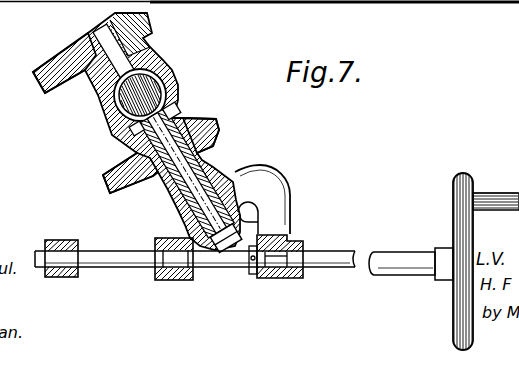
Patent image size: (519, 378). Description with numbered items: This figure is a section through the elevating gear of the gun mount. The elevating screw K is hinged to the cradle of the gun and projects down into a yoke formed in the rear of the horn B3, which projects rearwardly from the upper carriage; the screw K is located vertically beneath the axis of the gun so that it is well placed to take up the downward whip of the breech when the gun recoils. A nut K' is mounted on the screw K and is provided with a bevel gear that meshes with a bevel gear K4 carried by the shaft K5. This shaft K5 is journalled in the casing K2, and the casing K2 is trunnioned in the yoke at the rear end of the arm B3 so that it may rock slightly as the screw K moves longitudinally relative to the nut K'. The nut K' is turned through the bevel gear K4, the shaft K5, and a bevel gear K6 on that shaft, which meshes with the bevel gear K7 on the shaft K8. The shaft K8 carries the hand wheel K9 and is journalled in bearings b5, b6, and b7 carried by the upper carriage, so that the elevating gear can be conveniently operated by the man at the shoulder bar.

The elevating screw K is at (136, 131).
The nut K' is at (187, 147).
The casing K2 is at (241, 148).
The bevel gear K4 is at (186, 108).
The shaft K5 is at (232, 176).
The bevel gear K6 is at (243, 220).
The bevel gear K7 is at (207, 273).
The shaft K8 is at (388, 260).
The hand wheel K9 is at (456, 187).
The horn B3 is at (105, 178).
The bearing b5 is at (80, 275).
The bearing b6 is at (182, 282).
The bearing b7 is at (295, 280).